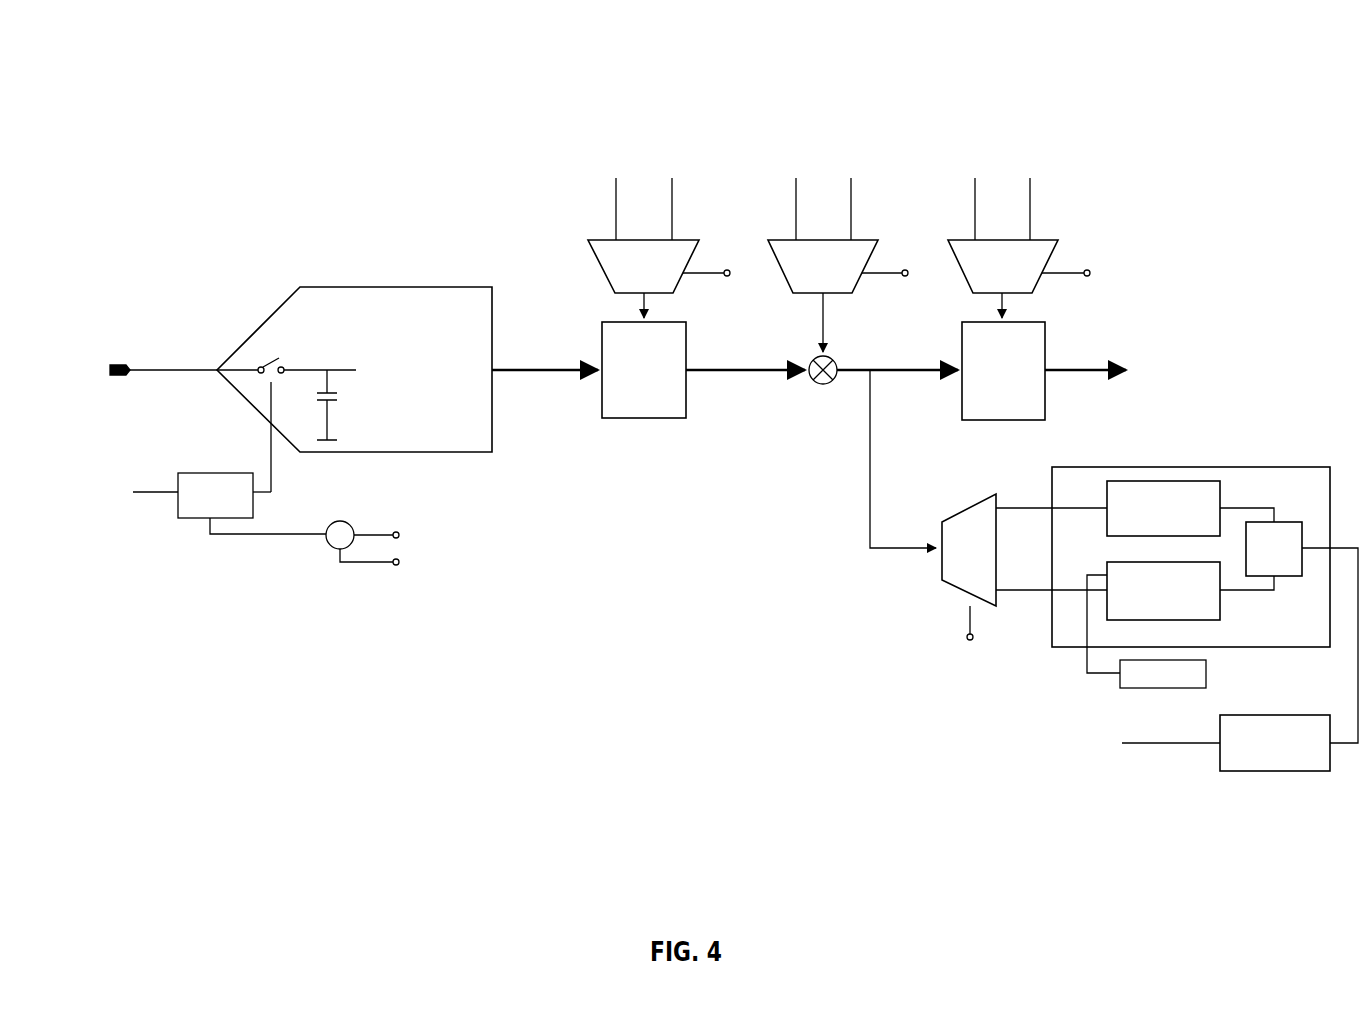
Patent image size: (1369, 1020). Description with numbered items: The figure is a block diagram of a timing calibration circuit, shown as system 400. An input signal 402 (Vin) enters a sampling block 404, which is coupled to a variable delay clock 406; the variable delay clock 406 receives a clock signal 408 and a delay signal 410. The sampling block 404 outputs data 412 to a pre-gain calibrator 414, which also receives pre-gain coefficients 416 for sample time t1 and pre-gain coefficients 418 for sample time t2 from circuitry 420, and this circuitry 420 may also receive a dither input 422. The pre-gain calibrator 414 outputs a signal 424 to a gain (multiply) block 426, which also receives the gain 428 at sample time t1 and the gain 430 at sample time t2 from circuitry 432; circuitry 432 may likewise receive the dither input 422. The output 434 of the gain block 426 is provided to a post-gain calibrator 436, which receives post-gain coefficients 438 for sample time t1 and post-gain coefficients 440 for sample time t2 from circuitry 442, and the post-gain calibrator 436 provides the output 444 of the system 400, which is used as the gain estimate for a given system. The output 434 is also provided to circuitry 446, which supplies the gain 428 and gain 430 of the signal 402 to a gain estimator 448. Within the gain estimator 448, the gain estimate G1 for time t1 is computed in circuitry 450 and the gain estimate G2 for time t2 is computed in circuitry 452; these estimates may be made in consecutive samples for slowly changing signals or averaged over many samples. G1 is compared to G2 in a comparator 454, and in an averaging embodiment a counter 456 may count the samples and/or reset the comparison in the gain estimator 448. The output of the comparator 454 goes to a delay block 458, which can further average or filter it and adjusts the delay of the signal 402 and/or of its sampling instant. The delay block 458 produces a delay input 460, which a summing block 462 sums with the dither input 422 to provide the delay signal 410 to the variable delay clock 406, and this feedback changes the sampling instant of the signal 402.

The system 400 is at (1141, 128).
The signal 402 is at (145, 372).
The sampling block 404 is at (300, 290).
The variable delay clock 406 is at (181, 518).
The clock signal 408 is at (146, 492).
The delay signal 410 is at (297, 536).
The data 412 is at (577, 367).
The pre-gain calibrator 414 is at (644, 355).
The pre-gain coefficients for sample time t1 416 is at (615, 194).
The pre-gain coefficients for sample time t2 418 is at (673, 195).
The circuitry 420 is at (592, 258).
The dither input 422 is at (376, 535).
The signal 424 is at (740, 373).
The gain block 426 is at (825, 387).
The gain at sample time t1 428 is at (797, 195).
The gain at sample time t2 430 is at (853, 195).
The circuitry 432 is at (778, 272).
The output 434 is at (855, 368).
The post-gain calibrator 436 is at (1003, 356).
The post-gain coefficients for sample time t1 438 is at (975, 193).
The post-gain coefficients for sample time t2 440 is at (1034, 193).
The circuitry 442 is at (1053, 253).
The output 444 is at (1110, 367).
The circuitry 446 is at (954, 585).
The gain estimator 448 is at (1197, 467).
The circuitry 450 is at (1190, 508).
The circuitry 452 is at (1190, 591).
The comparator 454 is at (1302, 632).
The counter 456 is at (1146, 631).
The delay block 458 is at (1265, 772).
The delay input 460 is at (368, 562).
The summing block 462 is at (338, 521).